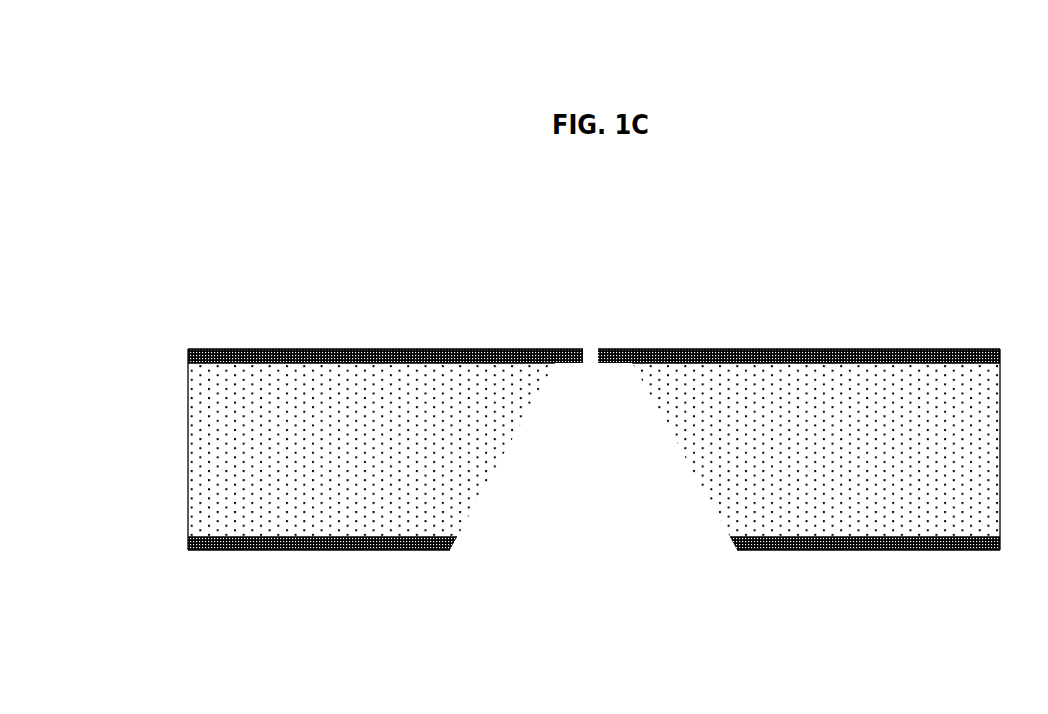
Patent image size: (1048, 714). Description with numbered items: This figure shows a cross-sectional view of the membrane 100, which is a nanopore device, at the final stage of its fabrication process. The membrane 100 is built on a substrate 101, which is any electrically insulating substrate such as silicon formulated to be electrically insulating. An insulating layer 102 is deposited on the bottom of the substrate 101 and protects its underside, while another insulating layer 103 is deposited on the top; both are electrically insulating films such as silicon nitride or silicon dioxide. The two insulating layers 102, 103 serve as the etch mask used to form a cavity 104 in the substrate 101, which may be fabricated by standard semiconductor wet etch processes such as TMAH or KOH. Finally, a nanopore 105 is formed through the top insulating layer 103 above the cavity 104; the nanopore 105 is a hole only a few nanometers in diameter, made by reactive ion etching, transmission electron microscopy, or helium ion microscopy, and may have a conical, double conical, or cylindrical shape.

The membrane 100 is at (109, 102).
The substrate 101 is at (197, 450).
The insulating layer 102 is at (188, 542).
The insulating layer 103 is at (188, 358).
The cavity 104 is at (578, 523).
The nanopore 105 is at (592, 339).